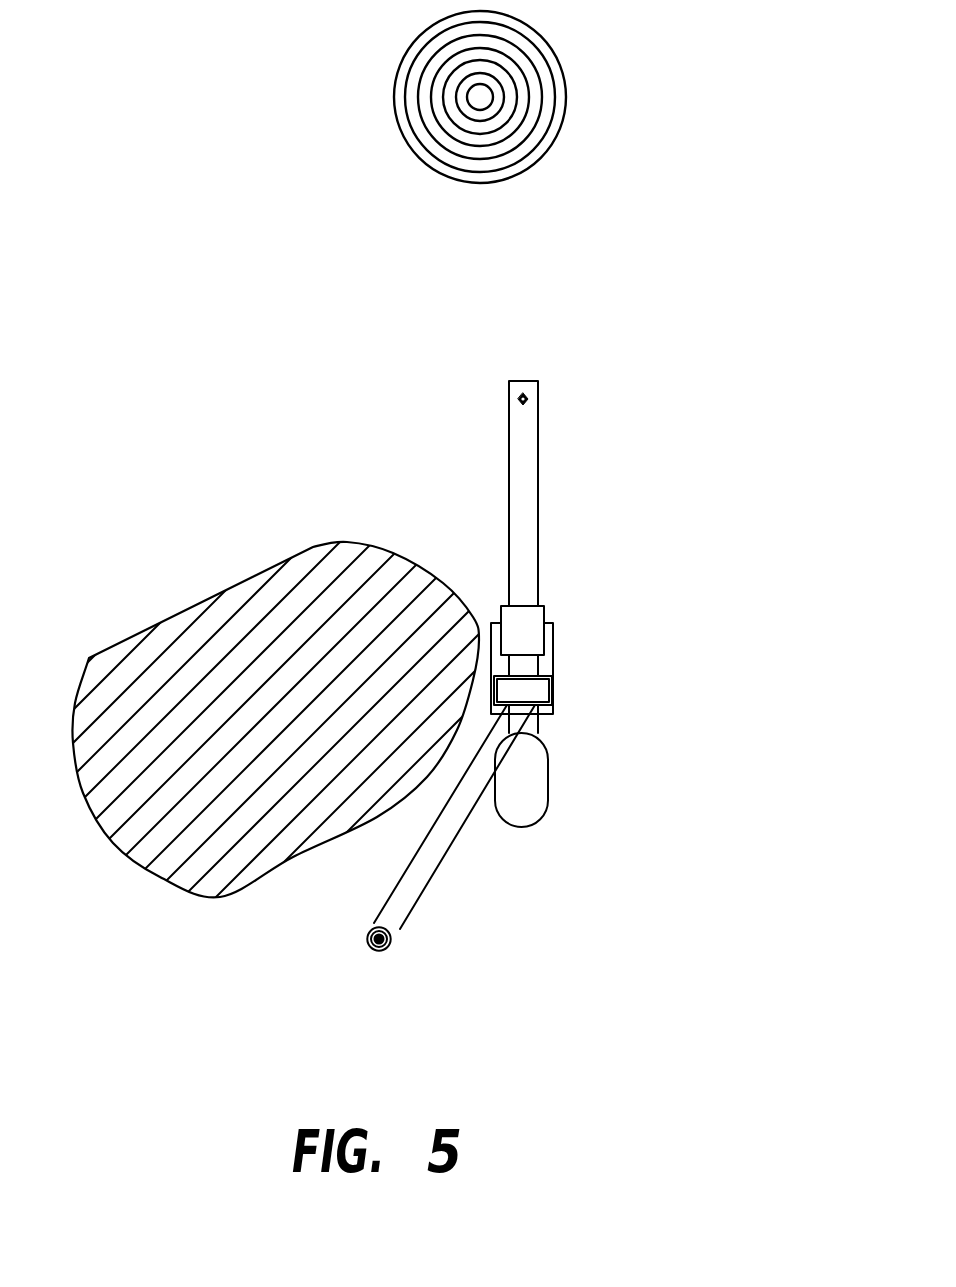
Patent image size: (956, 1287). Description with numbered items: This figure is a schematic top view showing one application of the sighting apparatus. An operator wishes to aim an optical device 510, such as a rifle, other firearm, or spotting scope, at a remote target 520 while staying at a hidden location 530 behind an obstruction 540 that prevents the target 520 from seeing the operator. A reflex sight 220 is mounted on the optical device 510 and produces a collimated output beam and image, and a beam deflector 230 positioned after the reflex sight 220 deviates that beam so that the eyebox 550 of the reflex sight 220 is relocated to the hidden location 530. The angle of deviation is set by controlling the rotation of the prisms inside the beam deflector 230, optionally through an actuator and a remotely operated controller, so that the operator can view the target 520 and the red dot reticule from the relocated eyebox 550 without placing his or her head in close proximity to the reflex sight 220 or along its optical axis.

The remote target 520 is at (542, 39).
The optical device 510 is at (540, 428).
The reflex sight 220 is at (545, 607).
The beam deflector 230 is at (546, 676).
The eyebox 550 is at (440, 863).
The hidden location 530 is at (370, 950).
The obstruction 540 is at (237, 577).